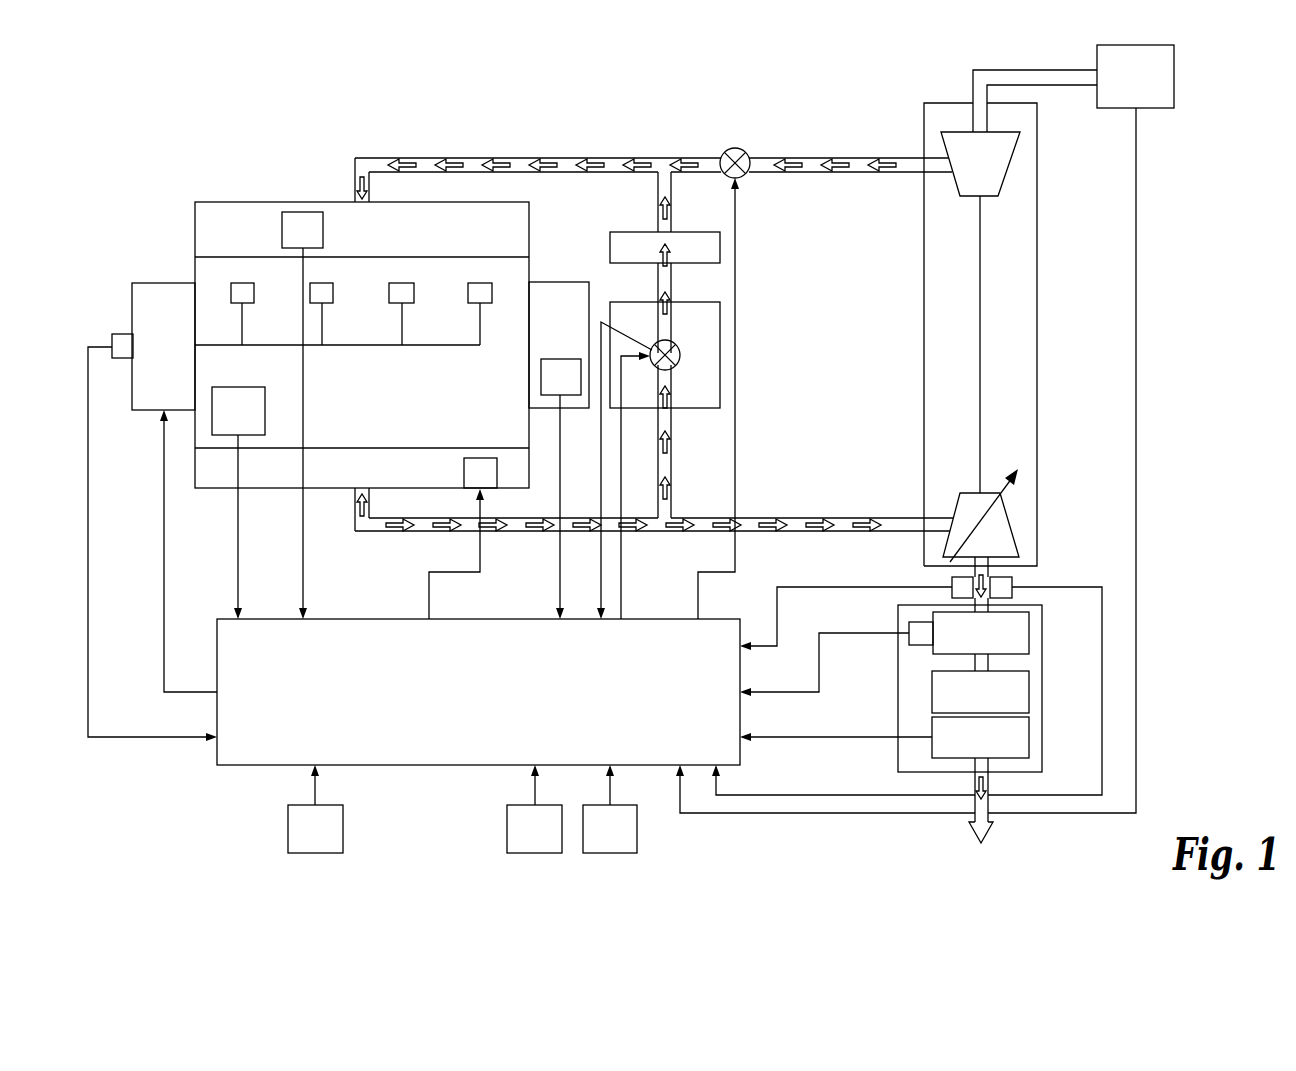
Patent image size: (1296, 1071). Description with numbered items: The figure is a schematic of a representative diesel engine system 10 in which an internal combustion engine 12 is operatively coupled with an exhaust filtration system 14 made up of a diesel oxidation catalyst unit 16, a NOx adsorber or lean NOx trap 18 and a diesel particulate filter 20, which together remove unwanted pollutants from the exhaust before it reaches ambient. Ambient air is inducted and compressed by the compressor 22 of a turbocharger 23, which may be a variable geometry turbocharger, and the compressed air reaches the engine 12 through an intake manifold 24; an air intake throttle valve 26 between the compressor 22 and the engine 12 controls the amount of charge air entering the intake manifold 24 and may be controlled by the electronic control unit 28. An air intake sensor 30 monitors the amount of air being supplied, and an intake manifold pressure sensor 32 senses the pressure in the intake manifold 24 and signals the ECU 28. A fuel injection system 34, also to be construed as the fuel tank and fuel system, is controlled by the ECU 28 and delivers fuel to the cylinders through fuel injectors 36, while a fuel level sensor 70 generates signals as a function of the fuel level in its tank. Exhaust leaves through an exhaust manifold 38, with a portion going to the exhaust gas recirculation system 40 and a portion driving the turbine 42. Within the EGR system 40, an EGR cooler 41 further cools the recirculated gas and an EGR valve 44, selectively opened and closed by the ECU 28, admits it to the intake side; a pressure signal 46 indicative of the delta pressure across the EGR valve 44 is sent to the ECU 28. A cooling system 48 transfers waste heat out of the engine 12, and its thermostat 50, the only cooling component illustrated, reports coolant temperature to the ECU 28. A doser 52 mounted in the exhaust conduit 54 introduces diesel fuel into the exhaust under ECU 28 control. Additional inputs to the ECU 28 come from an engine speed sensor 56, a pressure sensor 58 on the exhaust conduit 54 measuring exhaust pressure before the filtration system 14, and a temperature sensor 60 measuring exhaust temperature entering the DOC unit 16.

The system 10 is at (470, 138).
The internal combustion engine 12 is at (421, 400).
The exhaust filtration system 14 is at (1042, 665).
The diesel oxidation catalyst unit 16 is at (1029, 628).
The NOx adsorber 18 is at (1029, 690).
The diesel particulate filter 20 is at (1029, 735).
The compressor 22 is at (1012, 172).
The turbocharger 23 is at (924, 245).
The intake manifold 24 is at (230, 215).
The air intake throttle valve 26 is at (740, 148).
The electronic control unit 28 is at (347, 618).
The air intake sensor 30 is at (1155, 108).
The intake manifold pressure sensor 32 is at (294, 212).
The fuel injection system 34 is at (155, 283).
The fuel injectors 36 is at (333, 296).
The exhaust manifold 38 is at (213, 470).
The exhaust gas recirculation system 40 is at (720, 327).
The EGR cooler 41 is at (610, 238).
The turbine 42 is at (1012, 522).
The EGR valve 44 is at (680, 362).
The pressure signal 46 is at (600, 492).
The cooling system 48 is at (562, 282).
The thermostat 50 is at (552, 397).
The doser 52 is at (489, 453).
The exhaust conduit 54 is at (812, 517).
The engine speed sensor 56 is at (265, 400).
The pressure sensor 58 is at (952, 583).
The temperature sensor 60 is at (909, 627).
The fuel level sensor 70 is at (122, 333).